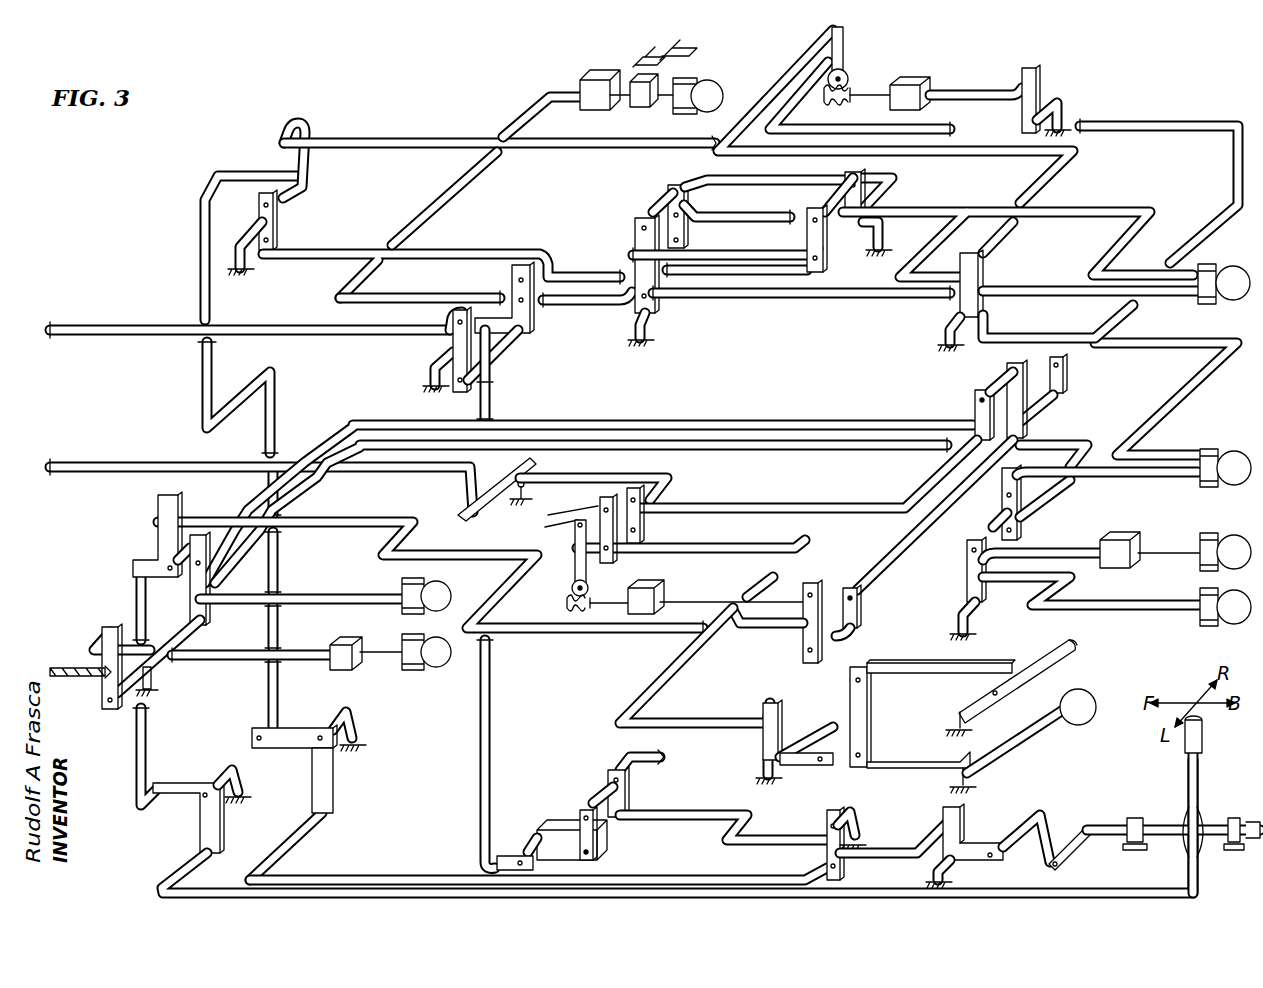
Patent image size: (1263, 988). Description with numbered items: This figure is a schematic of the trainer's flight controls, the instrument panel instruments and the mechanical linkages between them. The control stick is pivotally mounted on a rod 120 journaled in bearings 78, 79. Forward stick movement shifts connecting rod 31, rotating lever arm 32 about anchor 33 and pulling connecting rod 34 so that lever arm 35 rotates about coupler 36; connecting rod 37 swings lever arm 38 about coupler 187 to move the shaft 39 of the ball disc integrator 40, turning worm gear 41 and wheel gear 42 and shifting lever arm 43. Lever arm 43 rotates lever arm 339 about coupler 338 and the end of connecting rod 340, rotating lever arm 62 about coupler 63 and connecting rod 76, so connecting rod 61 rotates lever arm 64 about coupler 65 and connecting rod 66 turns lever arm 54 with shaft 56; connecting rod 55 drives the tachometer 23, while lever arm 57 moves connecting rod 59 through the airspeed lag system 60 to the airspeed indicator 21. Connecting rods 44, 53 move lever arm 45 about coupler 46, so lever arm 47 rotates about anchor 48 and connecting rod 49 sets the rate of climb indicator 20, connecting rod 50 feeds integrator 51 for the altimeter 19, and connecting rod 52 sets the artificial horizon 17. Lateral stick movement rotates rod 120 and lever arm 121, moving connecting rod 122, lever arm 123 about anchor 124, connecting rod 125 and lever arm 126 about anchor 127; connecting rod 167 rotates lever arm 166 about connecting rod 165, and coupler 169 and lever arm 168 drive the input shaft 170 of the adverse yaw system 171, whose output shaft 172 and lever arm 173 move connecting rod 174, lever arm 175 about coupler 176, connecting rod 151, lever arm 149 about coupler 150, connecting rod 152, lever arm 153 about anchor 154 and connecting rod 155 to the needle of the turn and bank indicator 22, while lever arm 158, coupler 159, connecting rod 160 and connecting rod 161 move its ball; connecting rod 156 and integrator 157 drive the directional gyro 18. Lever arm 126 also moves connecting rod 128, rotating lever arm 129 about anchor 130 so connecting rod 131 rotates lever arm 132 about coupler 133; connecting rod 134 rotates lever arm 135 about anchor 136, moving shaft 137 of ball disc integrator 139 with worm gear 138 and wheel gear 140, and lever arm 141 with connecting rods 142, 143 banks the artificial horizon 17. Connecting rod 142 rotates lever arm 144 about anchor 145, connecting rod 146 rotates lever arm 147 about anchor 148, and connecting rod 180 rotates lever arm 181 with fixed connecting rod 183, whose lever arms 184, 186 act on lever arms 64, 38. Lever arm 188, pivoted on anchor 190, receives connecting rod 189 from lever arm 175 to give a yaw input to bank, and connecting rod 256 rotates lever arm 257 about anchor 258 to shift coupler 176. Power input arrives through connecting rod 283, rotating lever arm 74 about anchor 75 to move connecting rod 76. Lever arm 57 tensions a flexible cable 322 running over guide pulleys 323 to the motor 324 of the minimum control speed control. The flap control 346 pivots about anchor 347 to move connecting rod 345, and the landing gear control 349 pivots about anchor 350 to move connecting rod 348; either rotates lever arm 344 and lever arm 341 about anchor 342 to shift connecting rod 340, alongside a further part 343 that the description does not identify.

The artificial horizon 17 is at (1225, 486).
The directional gyro 18 is at (707, 78).
The altimeter 19 is at (1197, 574).
The rate of climb indicator 20 is at (1201, 624).
The airspeed indicator 21 is at (408, 639).
The turn and bank indicator 22 is at (1228, 298).
The tachometer 23 is at (444, 591).
The connecting rod 31 is at (228, 894).
The lever arm 32 is at (195, 828).
The anchor 33 is at (230, 772).
The connecting rod 34 is at (147, 748).
The lever arm 35 is at (156, 506).
The coupler 36 is at (187, 579).
The connecting rod 37 is at (360, 526).
The lever arm 38 is at (804, 645).
The shaft 39 is at (745, 586).
The ball disc integrator 40 is at (658, 584).
The worm gear 41 is at (567, 606).
The wheel gear 42 is at (570, 590).
The lever arm 43 is at (570, 543).
The connecting rod 44 is at (855, 566).
The lever arm 45 is at (1016, 469).
The coupler 46 is at (1014, 525).
The lever arm 47 is at (971, 585).
The anchor 48 is at (972, 615).
The connecting rod 49 is at (1113, 602).
The connecting rod 50 is at (1066, 559).
The integrator 51 is at (1135, 540).
The connecting rod 52 is at (1145, 475).
The connecting rod 53 is at (1087, 443).
The lever arm 54 is at (227, 506).
The connecting rod 55 is at (331, 592).
The shaft 56 is at (193, 633).
The lever arm 57 is at (114, 625).
The connecting rod 59 is at (224, 662).
The airspeed lag system 60 is at (337, 640).
The connecting rod 61 is at (872, 506).
The lever arm 62 is at (644, 532).
The coupler 63 is at (609, 499).
The lever arm 64 is at (972, 411).
The coupler 65 is at (996, 386).
The connecting rod 66 is at (810, 424).
The lever arm 74 is at (464, 508).
The anchor 75 is at (522, 504).
The connecting rod 76 is at (593, 476).
The bearing 78 is at (1154, 808).
The bearing 79 is at (1253, 808).
The rod 120 is at (1216, 854).
The lever arm 121 is at (1079, 854).
The connecting rod 122 is at (1035, 821).
The lever arm 123 is at (960, 834).
The anchor 124 is at (944, 874).
The connecting rod 125 is at (899, 854).
The lever arm 126 is at (823, 854).
The anchor 127 is at (858, 826).
The connecting rod 128 is at (396, 876).
The lever arm 129 is at (333, 793).
The anchor 130 is at (342, 712).
The connecting rod 131 is at (277, 378).
The lever arm 132 is at (248, 170).
The coupler 133 is at (301, 190).
The connecting rod 134 is at (434, 141).
The lever arm 135 is at (1053, 39).
The anchor 136 is at (1063, 104).
The shaft 137 is at (993, 94).
The worm gear 138 is at (848, 106).
The ball disc integrator 139 is at (921, 71).
The wheel gear 140 is at (853, 69).
The lever arm 141 is at (846, 41).
The connecting rod 142 is at (813, 51).
The connecting rod 143 is at (935, 120).
The lever arm 144 is at (980, 272).
The anchor 145 is at (950, 331).
The connecting rod 146 is at (952, 189).
The lever arm 147 is at (876, 170).
The anchor 148 is at (884, 234).
The lever arm 149 is at (829, 261).
The coupler 150 is at (830, 200).
The connecting rod 151 is at (604, 261).
The connecting rod 152 is at (735, 256).
The lever arm 153 is at (630, 223).
The anchor 154 is at (653, 330).
The connecting rod 155 is at (858, 297).
The connecting rod 156 is at (524, 113).
The integrator 157 is at (594, 70).
The lever arm 158 is at (681, 177).
The coupler 159 is at (656, 199).
The connecting rod 160 is at (780, 179).
The connecting rod 161 is at (747, 214).
The connecting rod 165 is at (631, 754).
The lever arm 166 is at (630, 792).
The connecting rod 167 is at (730, 837).
The lever arm 168 is at (601, 840).
The coupler 169 is at (594, 787).
The input shaft 170 is at (607, 857).
The adverse yaw system 171 is at (540, 820).
The output shaft 172 is at (533, 831).
The lever arm 173 is at (494, 850).
The connecting rod 174 is at (496, 396).
The lever arm 175 is at (534, 330).
The coupler 176 is at (513, 354).
The connecting rod 180 is at (1066, 337).
The lever arm 181 is at (1067, 374).
The connecting rod 183 is at (1058, 403).
The lever arm 184 is at (1031, 404).
The lever arm 186 is at (859, 604).
The coupler 187 is at (852, 638).
The lever arm 188 is at (280, 223).
The connecting rod 189 is at (481, 246).
The anchor 190 is at (250, 230).
The connecting rod 256 is at (116, 327).
The lever arm 257 is at (450, 315).
The anchor 258 is at (450, 356).
The connecting rod 283 is at (122, 467).
The flexible cable 322 is at (84, 658).
The guide pulleys 323 is at (645, 112).
The motor 324 is at (679, 46).
The coupler 338 is at (552, 521).
The lever arm 339 is at (636, 45).
The connecting rod 340 is at (725, 716).
The lever arm 341 is at (789, 763).
The anchor 342 is at (754, 767).
The link 343 is at (838, 725).
The lever arm 344 is at (846, 682).
The connecting rod 345 is at (955, 666).
The flap control 346 is at (1045, 660).
The anchor 347 is at (956, 718).
The connecting rod 348 is at (927, 759).
The landing gear control 349 is at (1044, 737).
The anchor 350 is at (950, 780).